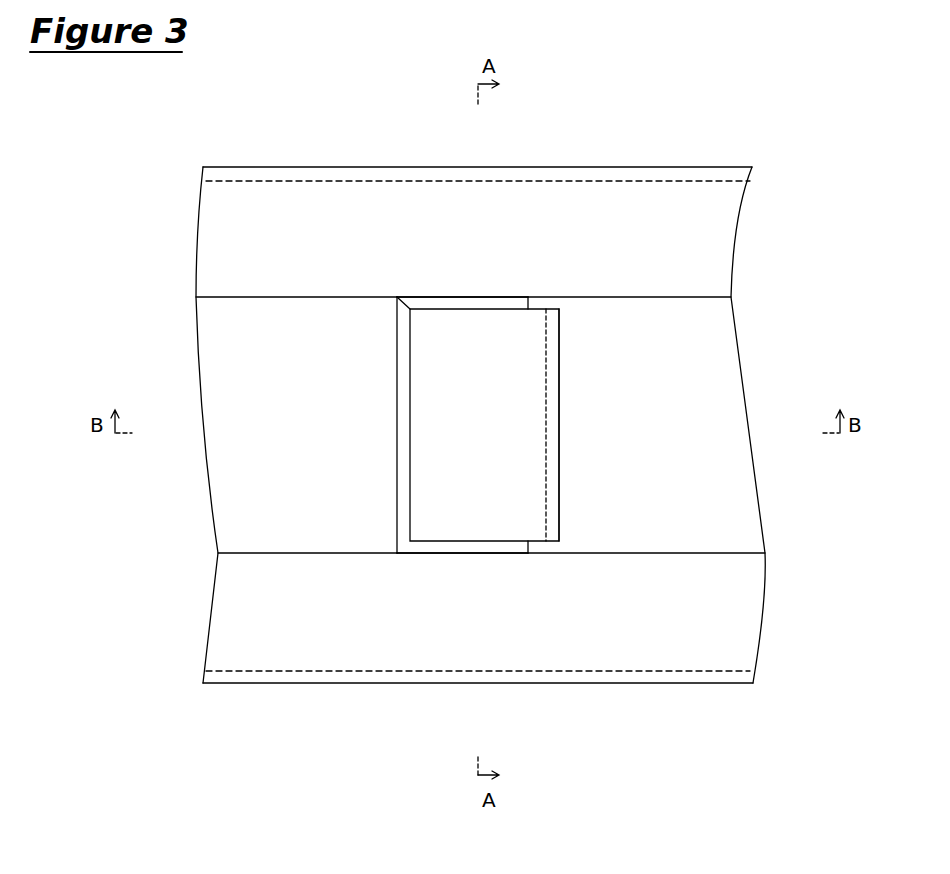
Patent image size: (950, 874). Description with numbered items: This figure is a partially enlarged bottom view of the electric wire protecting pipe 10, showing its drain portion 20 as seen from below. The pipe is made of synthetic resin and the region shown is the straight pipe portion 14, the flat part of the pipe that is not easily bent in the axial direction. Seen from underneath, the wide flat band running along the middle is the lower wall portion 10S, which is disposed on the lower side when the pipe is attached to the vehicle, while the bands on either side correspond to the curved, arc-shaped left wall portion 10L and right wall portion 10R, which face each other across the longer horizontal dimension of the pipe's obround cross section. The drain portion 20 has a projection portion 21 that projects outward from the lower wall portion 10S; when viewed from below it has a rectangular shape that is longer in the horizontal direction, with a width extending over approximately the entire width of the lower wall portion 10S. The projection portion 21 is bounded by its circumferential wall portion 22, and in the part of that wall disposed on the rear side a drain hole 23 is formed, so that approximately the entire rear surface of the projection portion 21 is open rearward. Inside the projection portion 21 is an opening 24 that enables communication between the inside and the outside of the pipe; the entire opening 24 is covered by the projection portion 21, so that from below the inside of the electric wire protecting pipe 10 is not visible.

The electric wire protecting pipe 10 is at (619, 204).
The right wall portion 10R is at (686, 210).
The left wall portion 10L is at (678, 650).
The lower wall portion 10S is at (690, 357).
The straight pipe portion 14 is at (327, 210).
The drain portion 20 is at (432, 510).
The projection portion 21 is at (463, 517).
The circumferential wall portion 22 is at (403, 402).
The drain hole 23 is at (560, 442).
The opening 24 is at (514, 467).